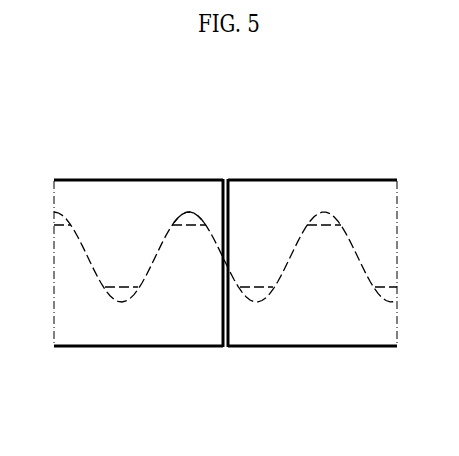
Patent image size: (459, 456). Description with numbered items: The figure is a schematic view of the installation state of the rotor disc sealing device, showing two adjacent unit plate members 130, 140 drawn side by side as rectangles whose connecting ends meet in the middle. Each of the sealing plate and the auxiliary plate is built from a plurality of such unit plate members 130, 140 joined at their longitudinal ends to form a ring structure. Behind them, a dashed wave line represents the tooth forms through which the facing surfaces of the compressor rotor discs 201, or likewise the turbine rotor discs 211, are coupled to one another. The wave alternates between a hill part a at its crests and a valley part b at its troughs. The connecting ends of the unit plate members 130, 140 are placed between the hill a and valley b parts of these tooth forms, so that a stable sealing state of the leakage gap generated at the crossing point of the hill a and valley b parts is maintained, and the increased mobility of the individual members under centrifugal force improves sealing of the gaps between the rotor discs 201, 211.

The unit plate member 130 is at (230, 225).
The unit plate member 140 is at (107, 179).
The compressor rotor disc 201 is at (225, 265).
The turbine rotor disc 211 is at (225, 265).
The hill part a is at (188, 211).
The valley part b is at (192, 226).